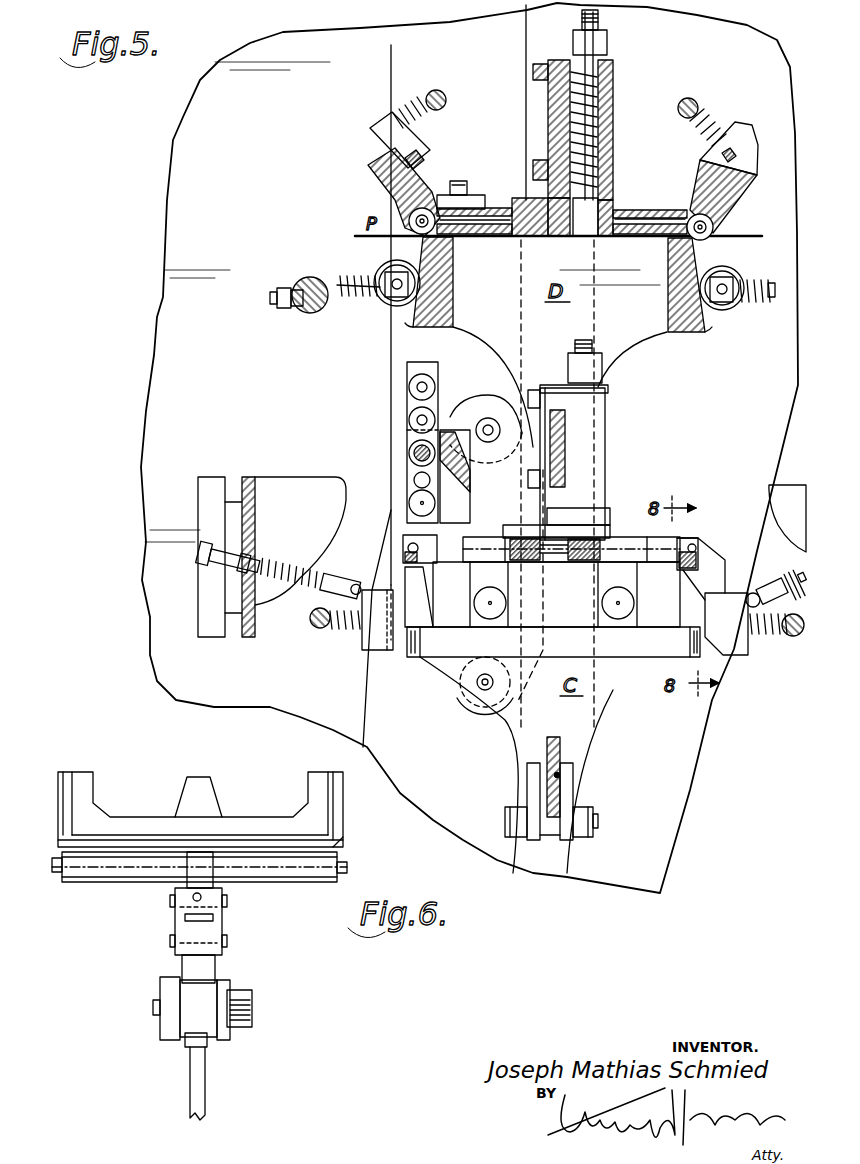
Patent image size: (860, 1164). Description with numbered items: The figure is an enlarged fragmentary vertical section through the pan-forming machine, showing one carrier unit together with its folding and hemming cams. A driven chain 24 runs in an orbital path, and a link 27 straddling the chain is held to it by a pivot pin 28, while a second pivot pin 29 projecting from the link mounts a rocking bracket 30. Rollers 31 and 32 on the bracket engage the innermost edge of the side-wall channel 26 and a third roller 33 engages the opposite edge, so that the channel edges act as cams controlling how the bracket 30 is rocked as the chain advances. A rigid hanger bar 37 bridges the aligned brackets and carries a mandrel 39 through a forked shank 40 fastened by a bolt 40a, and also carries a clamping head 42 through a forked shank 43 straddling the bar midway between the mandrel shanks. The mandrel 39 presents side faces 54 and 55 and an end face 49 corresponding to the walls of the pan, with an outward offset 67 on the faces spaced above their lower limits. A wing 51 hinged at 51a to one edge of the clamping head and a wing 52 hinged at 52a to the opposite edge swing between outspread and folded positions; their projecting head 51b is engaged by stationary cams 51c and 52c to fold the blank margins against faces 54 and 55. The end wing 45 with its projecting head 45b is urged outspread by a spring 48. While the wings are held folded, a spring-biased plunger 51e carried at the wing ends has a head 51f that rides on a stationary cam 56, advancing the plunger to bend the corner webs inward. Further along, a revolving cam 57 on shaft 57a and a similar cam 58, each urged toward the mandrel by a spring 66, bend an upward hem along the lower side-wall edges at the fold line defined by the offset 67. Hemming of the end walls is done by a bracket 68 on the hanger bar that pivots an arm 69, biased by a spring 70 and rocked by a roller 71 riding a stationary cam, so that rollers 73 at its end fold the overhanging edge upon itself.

In FIG. 5, the channel 26 is at (391, 370).
In FIG. 5, the clamping head 42 is at (628, 207).
In FIG. 5, the shank 43 is at (617, 88).
In FIG. 5, the mandrel face 54 is at (453, 250).
In FIG. 6, the mandrel face 54 is at (72, 790).
In FIG. 5, the mandrel face 55 is at (668, 255).
In FIG. 6, the mandrel face 55 is at (328, 795).
In FIG. 5, the mandrel 39 is at (641, 340).
In FIG. 6, the mandrel 39 is at (217, 812).
In FIG. 5, the outward offset 67 is at (420, 325).
In FIG. 6, the outward offset 67 is at (58, 790).
In FIG. 5, the revolving cam 57 is at (385, 297).
In FIG. 5, the shaft 57a is at (307, 313).
In FIG. 5, the spring 66 is at (356, 300).
In FIG. 5, the revolving cam 58 is at (733, 305).
In FIG. 5, the wing 51 is at (375, 195).
In FIG. 5, the hinge 51a is at (442, 195).
In FIG. 5, the projecting head 51b is at (425, 145).
In FIG. 5, the cam 51c is at (360, 576).
In FIG. 5, the plunger 51e is at (410, 102).
In FIG. 5, the head 51f is at (442, 92).
In FIG. 5, the wing 52 is at (748, 148).
In FIG. 5, the hinge 52a is at (720, 232).
In FIG. 5, the cam 52c is at (755, 590).
In FIG. 5, the chain 24 is at (430, 378).
In FIG. 5, the pivot pin 28 is at (413, 453).
In FIG. 5, the pivot pin 29 is at (414, 480).
In FIG. 5, the link 27 is at (470, 476).
In FIG. 5, the roller 31 is at (486, 419).
In FIG. 5, the hanger bar 37 is at (566, 464).
In FIG. 6, the hanger bar 37 is at (192, 1080).
In FIG. 5, the bracket 30 is at (395, 519).
In FIG. 5, the stationary cam 56 is at (287, 482).
In FIG. 5, the spring 48 is at (582, 562).
In FIG. 5, the projecting head 45b is at (618, 608).
In FIG. 5, the wing 45 is at (553, 642).
In FIG. 5, the roller 33 is at (404, 608).
In FIG. 5, the roller 32 is at (463, 688).
In FIG. 5, the shank 40 is at (559, 776).
In FIG. 5, the bolt 40a is at (598, 821).
In FIG. 6, the mandrel face 49 is at (145, 840).
In FIG. 6, the roller 73 is at (92, 872).
In FIG. 6, the spring 70 is at (222, 928).
In FIG. 6, the arm 69 is at (215, 965).
In FIG. 6, the bracket 68 is at (165, 990).
In FIG. 6, the roller 71 is at (252, 1010).